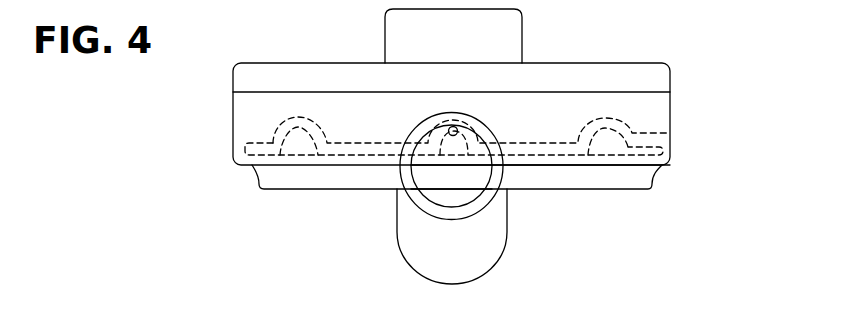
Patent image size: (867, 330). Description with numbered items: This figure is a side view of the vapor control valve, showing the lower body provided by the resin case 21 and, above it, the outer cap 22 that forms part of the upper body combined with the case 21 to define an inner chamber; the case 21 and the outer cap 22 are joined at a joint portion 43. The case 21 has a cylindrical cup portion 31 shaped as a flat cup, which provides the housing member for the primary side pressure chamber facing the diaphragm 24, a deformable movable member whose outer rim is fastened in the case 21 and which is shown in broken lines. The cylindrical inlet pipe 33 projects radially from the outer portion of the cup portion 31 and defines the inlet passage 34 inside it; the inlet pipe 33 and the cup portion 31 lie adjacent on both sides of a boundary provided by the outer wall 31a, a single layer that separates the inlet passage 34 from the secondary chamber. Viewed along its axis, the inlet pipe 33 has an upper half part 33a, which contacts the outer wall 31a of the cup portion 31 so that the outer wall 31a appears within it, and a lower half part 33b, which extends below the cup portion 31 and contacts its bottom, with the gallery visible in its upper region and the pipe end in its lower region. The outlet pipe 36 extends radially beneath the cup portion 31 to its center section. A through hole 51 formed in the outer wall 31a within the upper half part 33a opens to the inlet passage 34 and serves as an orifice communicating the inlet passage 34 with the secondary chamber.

The case 21 is at (670, 116).
The outer cap 22 is at (670, 73).
The joint portion 43 is at (670, 92).
The cup portion 31 is at (233, 135).
The outer wall 31a is at (504, 167).
The diaphragm 24 is at (670, 133).
The inlet pipe 33 is at (502, 169).
The upper half part 33a is at (455, 145).
The lower half part 33b is at (474, 207).
The inlet passage 34 is at (445, 175).
The outlet pipe 36 is at (404, 257).
The through hole 51 is at (448, 133).